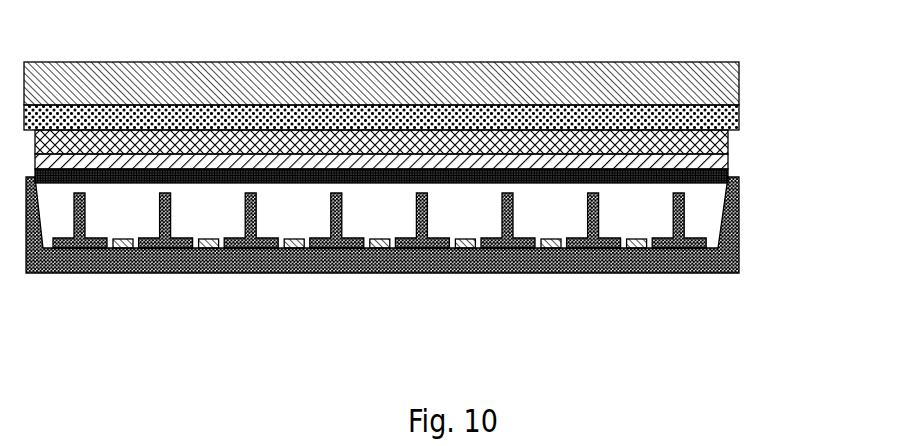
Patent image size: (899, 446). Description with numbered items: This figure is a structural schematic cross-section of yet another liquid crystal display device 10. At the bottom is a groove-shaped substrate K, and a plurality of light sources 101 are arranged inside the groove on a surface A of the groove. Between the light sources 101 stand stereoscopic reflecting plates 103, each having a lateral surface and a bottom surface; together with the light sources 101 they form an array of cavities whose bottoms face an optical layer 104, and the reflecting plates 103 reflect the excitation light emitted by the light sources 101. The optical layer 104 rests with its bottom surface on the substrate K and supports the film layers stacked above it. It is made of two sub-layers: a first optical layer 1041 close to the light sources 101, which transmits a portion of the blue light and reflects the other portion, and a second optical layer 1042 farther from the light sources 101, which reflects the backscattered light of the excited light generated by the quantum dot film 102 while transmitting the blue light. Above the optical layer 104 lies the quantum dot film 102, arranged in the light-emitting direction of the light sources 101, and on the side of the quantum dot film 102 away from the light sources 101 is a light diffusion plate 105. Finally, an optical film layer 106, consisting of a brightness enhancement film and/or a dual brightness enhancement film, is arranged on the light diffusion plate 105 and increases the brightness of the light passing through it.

The liquid crystal display device 10 is at (424, 44).
The optical film layer 106 is at (750, 82).
The light diffusion plate 105 is at (750, 112).
The quantum dot film 102 is at (740, 138).
The optical layer 104 is at (461, 170).
The second optical layer 1042 is at (732, 160).
The first optical layer 1041 is at (733, 176).
The stereoscopic reflecting plate 103 is at (695, 228).
The light source 101 is at (636, 252).
The substrate K is at (750, 262).
The surface of the groove A is at (563, 258).